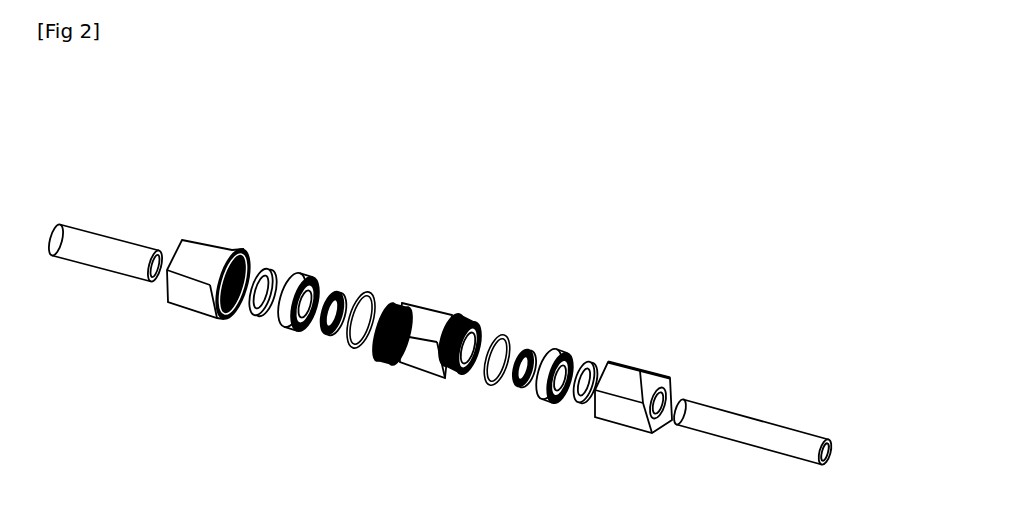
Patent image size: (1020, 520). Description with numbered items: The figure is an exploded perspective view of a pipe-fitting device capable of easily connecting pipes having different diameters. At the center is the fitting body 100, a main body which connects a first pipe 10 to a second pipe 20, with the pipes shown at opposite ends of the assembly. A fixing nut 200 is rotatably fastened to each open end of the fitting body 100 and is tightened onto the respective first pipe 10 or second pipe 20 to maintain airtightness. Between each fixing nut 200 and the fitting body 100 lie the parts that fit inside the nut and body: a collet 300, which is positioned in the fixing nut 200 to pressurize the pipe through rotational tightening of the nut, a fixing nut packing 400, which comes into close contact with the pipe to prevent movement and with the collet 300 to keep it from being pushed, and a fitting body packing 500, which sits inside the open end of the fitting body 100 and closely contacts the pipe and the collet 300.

The first pipe 10 is at (100, 243).
The second pipe 20 is at (721, 417).
The fitting body 100 is at (432, 323).
The fixing nut 200 is at (192, 256).
The collet 300 is at (298, 278).
The fixing nut packing 400 is at (263, 264).
The fitting body packing 500 is at (333, 291).